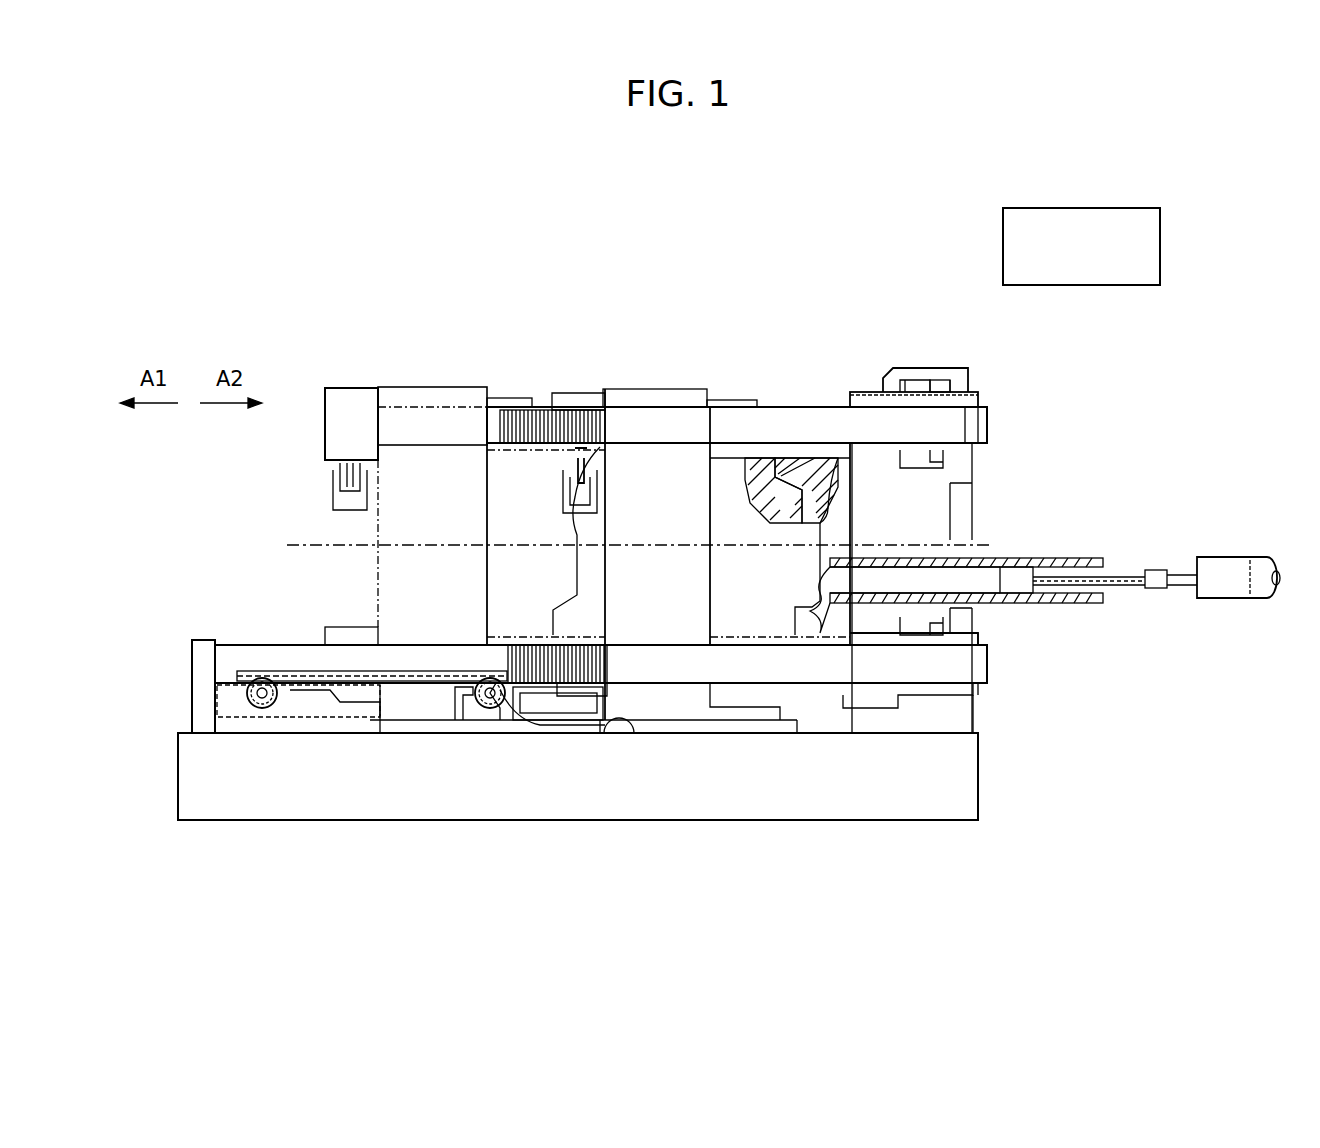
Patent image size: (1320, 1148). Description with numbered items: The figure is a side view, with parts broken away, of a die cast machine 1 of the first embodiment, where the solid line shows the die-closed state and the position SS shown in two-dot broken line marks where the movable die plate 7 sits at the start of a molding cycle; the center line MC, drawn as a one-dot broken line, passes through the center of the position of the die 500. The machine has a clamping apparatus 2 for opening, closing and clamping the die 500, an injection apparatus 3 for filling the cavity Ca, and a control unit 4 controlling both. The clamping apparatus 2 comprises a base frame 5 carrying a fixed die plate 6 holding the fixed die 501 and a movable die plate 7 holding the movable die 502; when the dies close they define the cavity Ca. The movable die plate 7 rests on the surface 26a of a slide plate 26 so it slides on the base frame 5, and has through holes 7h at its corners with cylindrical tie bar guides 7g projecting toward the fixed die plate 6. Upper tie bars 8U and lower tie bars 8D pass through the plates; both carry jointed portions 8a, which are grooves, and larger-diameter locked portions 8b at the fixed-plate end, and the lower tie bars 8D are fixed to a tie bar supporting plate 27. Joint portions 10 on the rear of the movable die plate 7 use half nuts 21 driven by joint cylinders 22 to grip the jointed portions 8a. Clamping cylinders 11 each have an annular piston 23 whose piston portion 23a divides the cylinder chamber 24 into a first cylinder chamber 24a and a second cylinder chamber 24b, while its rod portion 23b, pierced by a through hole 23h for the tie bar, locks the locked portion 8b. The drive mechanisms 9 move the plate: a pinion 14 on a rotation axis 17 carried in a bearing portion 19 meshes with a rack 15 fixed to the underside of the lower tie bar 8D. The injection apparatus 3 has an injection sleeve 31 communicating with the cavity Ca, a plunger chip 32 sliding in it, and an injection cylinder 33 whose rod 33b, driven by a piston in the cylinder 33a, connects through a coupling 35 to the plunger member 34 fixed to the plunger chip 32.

The die cast machine 1 is at (699, 163).
The clamping apparatus 2 is at (553, 280).
The injection apparatus 3 is at (1205, 547).
The control unit 4 is at (1163, 243).
The base frame 5 is at (982, 770).
The fixed die plate 6 is at (975, 512).
The movable die plate 7 is at (668, 442).
The through holes 7h is at (727, 410).
The tie bar guides 7g is at (740, 409).
The jointed portions 8a is at (548, 437).
The locked portion 8b is at (978, 470).
The upper tie bars 8U is at (985, 432).
The lower tie bars 8D is at (990, 668).
The drive mechanisms 9 is at (447, 714).
The joint portions 10 is at (573, 410).
The clamping cylinders 11 is at (1097, 363).
The pinion 14 is at (490, 700).
The rack 15 is at (430, 705).
The rotation axis 17 is at (485, 710).
The bearing portion 19 is at (585, 720).
The half nuts 21 is at (580, 462).
The joint cylinders 22 is at (630, 442).
The annular piston 23 is at (982, 404).
The piston portion 23a is at (946, 392).
The rod portion 23b is at (978, 392).
The through hole 23h is at (985, 420).
The cylinder chamber 24 is at (972, 380).
The first cylinder chamber 24a is at (905, 392).
The second cylinder chamber 24b is at (955, 380).
The slide plate 26 is at (670, 740).
The surface to be mounted 26a is at (622, 740).
The tie bar supporting plate 27 is at (191, 660).
The injection sleeve 31 is at (1080, 580).
The plunger chip 32 is at (1022, 580).
The injection cylinder 33 is at (1232, 598).
The cylinder 33a is at (1238, 577).
The rod 33b is at (1188, 575).
The plunger chip 34 is at (1125, 585).
The coupling 35 is at (1155, 590).
The die 500 is at (922, 292).
The fixed die 501 is at (827, 452).
The movable die 502 is at (765, 458).
The cavity Ca is at (840, 452).
The position SS is at (413, 388).
The center line MC is at (330, 545).